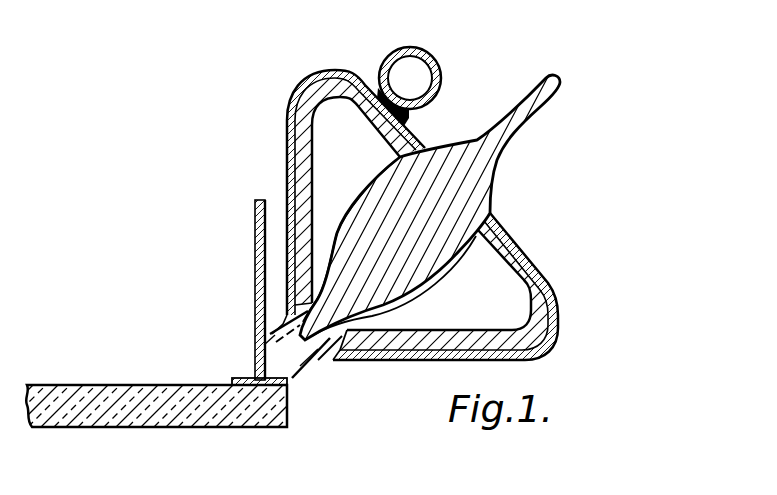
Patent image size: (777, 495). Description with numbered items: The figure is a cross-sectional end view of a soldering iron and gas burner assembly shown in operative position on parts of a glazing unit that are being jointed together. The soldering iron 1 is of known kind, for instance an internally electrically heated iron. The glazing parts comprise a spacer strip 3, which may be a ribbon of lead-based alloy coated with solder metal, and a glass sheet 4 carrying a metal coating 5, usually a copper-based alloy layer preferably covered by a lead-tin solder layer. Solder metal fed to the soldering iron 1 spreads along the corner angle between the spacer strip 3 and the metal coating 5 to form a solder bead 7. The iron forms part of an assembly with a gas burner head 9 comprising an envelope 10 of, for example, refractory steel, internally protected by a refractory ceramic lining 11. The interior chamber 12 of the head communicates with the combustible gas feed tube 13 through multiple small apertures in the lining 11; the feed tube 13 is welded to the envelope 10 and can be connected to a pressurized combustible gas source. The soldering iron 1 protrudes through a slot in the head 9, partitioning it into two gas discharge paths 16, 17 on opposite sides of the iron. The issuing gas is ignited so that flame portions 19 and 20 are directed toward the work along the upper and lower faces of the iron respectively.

The soldering iron 1 is at (542, 123).
The spacer strip 3 is at (266, 337).
The glass sheet 4 is at (105, 427).
The metal coating 5 is at (238, 378).
The solder bead 7 is at (254, 386).
The gas burner head 9 is at (572, 336).
The envelope 10 is at (287, 170).
The refractory ceramic lining 11 is at (290, 107).
The interior chamber 12 is at (500, 305).
The combustible gas feed tube 13 is at (436, 57).
The gas discharge path 16 is at (331, 240).
The gas discharge path 17 is at (405, 313).
The flame portion 19 is at (282, 320).
The flame portion 20 is at (328, 368).